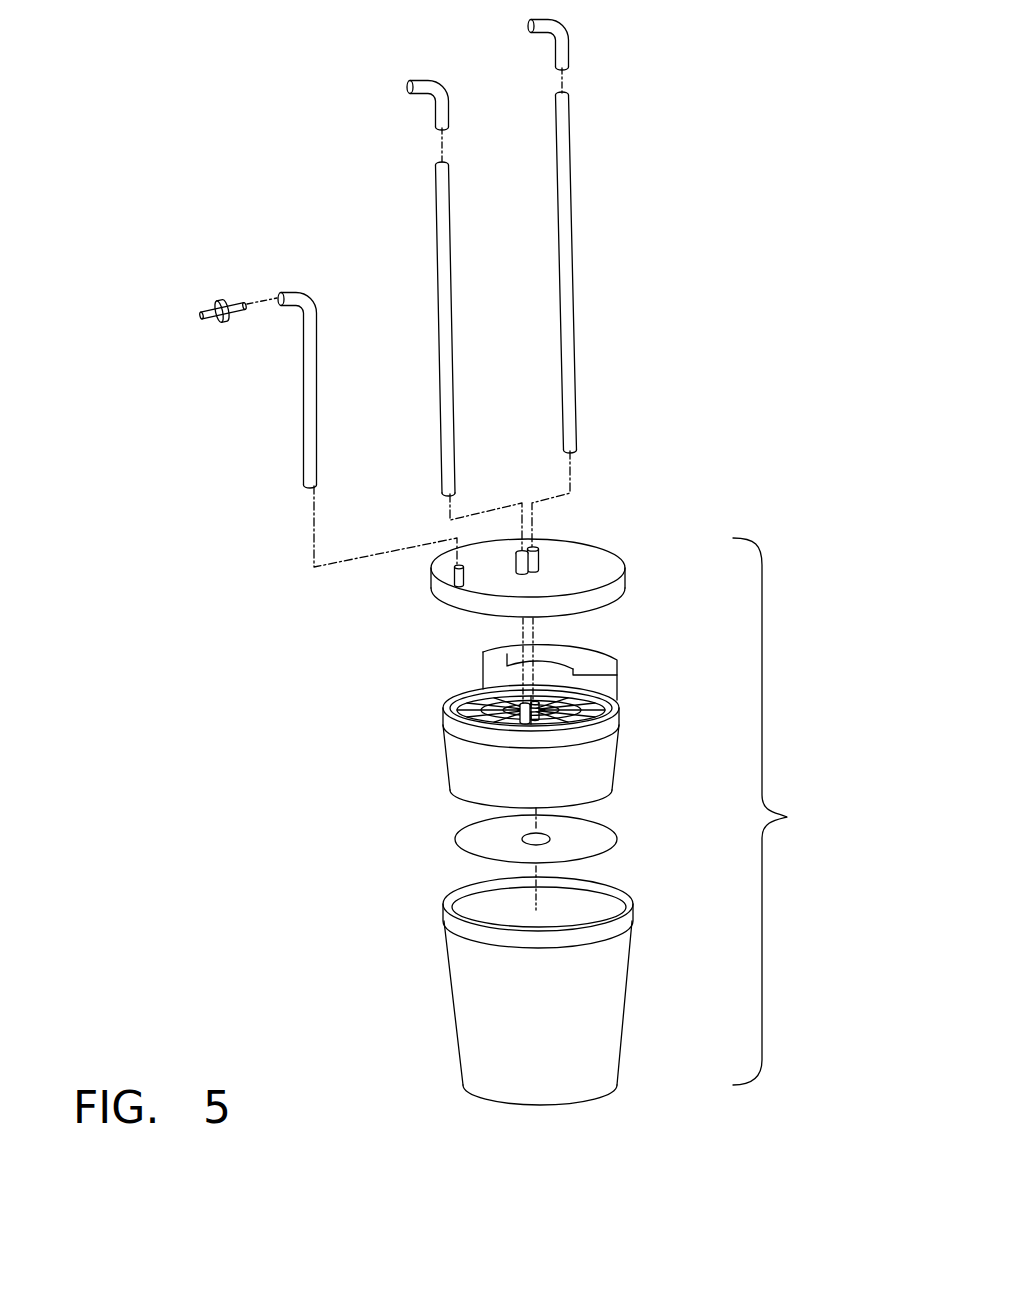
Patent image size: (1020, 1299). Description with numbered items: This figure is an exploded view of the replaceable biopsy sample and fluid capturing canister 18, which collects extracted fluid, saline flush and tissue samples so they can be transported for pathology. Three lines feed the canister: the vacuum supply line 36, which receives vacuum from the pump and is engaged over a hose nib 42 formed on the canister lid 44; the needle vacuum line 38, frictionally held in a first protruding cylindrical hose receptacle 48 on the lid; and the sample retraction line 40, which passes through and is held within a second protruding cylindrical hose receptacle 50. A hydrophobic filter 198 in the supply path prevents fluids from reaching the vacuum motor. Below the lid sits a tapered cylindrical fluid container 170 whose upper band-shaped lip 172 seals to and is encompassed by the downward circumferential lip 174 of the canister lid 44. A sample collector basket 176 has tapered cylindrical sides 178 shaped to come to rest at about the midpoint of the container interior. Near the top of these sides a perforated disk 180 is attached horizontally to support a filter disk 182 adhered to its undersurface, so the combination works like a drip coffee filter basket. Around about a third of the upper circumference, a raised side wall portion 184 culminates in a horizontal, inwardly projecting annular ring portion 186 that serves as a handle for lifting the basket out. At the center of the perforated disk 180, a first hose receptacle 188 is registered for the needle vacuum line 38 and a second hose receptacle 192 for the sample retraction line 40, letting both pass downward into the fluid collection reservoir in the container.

The biopsy sample and fluid capturing canister 18 is at (604, 804).
The vacuum supply line 36 is at (318, 412).
The needle vacuum line 38 is at (577, 384).
The sample retraction line 40 is at (452, 407).
The hose nib 42 is at (453, 573).
The canister lid 44 is at (542, 569).
The first protruding cylindrical hose receptacle 48 is at (537, 550).
The second protruding cylindrical hose receptacle 50 is at (512, 568).
The tapered cylindrical fluid container 170 is at (525, 991).
The upper band-shaped lip 172 is at (632, 907).
The downward circumferential lip 174 is at (618, 597).
The sample collector basket 176 is at (544, 719).
The tapered cylindrical sides 178 is at (600, 767).
The perforated disk 180 is at (475, 697).
The filter disk 182 is at (458, 836).
The raised side wall portion 184 is at (483, 667).
The annular ring portion 186 is at (617, 660).
The first hose receptacle 188 is at (537, 727).
The second hose receptacle 192 is at (527, 724).
The hydrophobic filter 198 is at (220, 302).